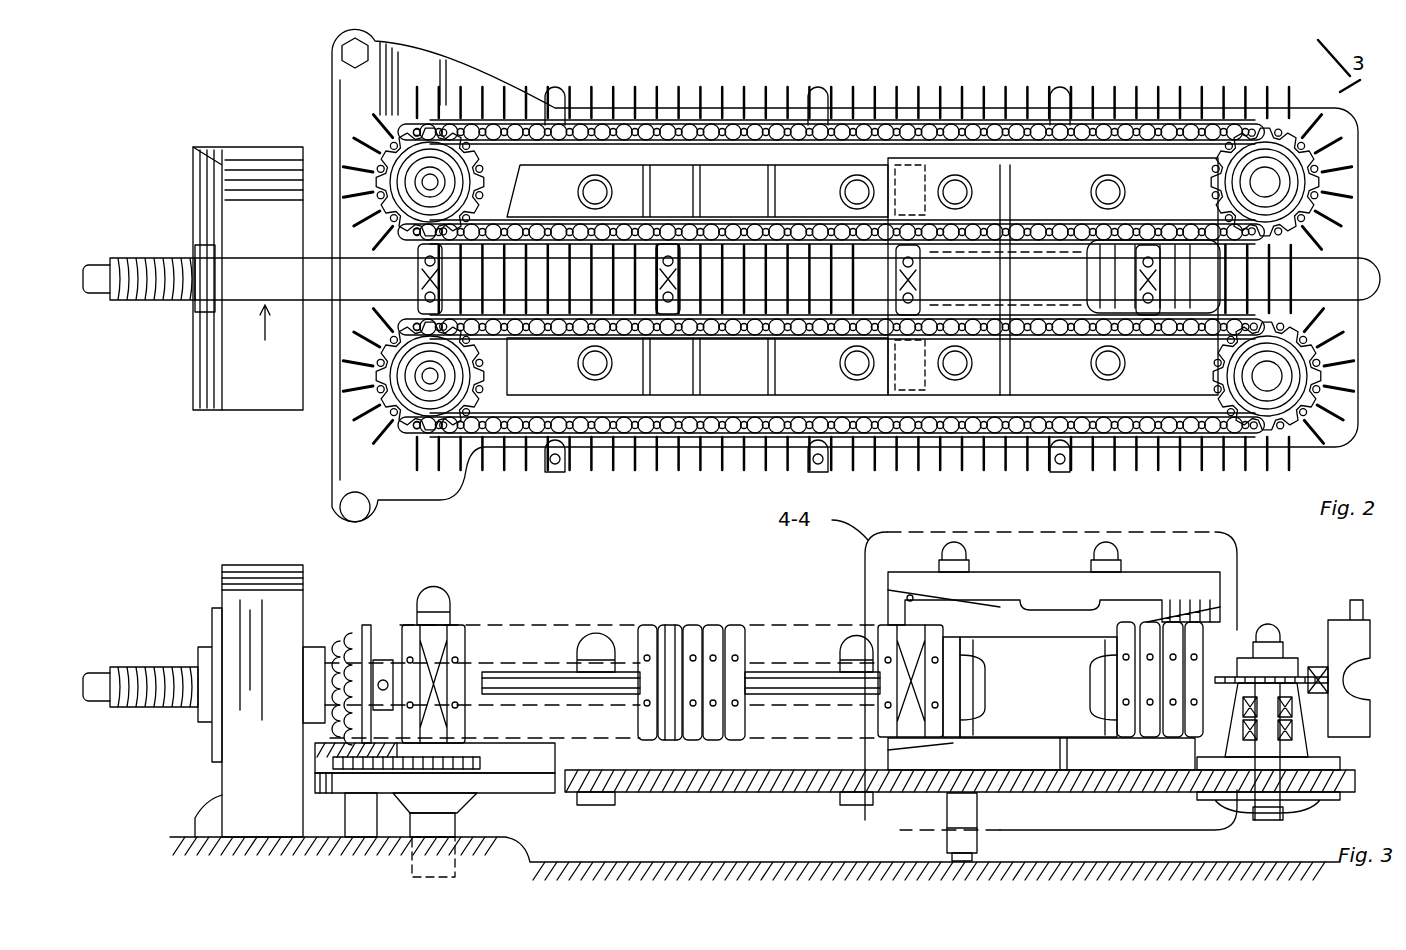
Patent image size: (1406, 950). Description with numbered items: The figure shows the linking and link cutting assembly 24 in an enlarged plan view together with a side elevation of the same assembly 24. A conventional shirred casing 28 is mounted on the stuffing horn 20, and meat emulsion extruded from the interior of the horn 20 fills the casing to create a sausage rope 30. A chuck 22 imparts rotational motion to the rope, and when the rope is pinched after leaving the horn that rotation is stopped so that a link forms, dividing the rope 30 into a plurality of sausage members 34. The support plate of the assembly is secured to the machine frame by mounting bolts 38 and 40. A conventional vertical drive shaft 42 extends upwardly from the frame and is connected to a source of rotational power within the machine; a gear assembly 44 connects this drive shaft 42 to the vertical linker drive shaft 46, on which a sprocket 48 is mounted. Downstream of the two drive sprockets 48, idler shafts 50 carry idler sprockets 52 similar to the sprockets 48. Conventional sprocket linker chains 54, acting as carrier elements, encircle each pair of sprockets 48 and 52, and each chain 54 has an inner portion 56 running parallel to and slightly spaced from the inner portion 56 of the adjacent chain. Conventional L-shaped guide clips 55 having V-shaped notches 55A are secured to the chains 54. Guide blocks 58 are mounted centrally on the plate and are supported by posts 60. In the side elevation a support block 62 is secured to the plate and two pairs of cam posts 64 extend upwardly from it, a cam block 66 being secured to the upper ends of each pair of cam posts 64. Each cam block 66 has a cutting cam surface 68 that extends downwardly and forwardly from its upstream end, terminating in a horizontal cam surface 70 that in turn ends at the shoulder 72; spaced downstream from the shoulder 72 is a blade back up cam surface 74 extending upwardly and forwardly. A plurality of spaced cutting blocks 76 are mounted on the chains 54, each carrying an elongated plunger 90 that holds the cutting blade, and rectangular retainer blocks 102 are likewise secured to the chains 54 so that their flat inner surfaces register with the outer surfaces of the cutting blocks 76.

In FIG. 2, the stuffing horn 20 is at (180, 258).
In FIG. 3, the stuffing horn 20 is at (162, 667).
In FIG. 2, the chuck 22 is at (222, 165).
In FIG. 3, the chuck 22 is at (222, 580).
In FIG. 2, the cutting head assembly 24 is at (326, 70).
In FIG. 3, the cutting head assembly 24 is at (556, 600).
In FIG. 2, the shirred casing 28 is at (150, 258).
In FIG. 3, the shirred casing 28 is at (102, 667).
In FIG. 2, the sausage rope 30 is at (1350, 262).
In FIG. 3, the sausage rope 30 is at (367, 690).
In FIG. 2, the sausage members 34 is at (1356, 302).
In FIG. 2, the mounting bolt 38 is at (340, 52).
In FIG. 3, the mounting bolt 38 is at (357, 825).
In FIG. 3, the mounting bolt 40 is at (782, 794).
In FIG. 3, the vertical drive shaft 42 is at (410, 860).
In FIG. 3, the gear assembly 44 is at (475, 792).
In FIG. 2, the vertical linker drive shaft 46 is at (447, 158).
In FIG. 3, the vertical linker drive shaft 46 is at (440, 596).
In FIG. 2, the sprocket 48 is at (440, 178).
In FIG. 3, the sprocket 48 is at (490, 683).
In FIG. 2, the idler shaft 50 is at (1228, 183).
In FIG. 3, the idler shaft 50 is at (1240, 782).
In FIG. 2, the idler sprocket 52 is at (1215, 200).
In FIG. 3, the idler sprocket 52 is at (1262, 700).
In FIG. 2, the sprocket linker chain 54 is at (606, 122).
In FIG. 3, the sprocket linker chain 54 is at (370, 640).
In FIG. 2, the L-shaped guide clip 55 is at (618, 118).
In FIG. 3, the L-shaped guide clip 55 is at (365, 680).
In FIG. 3, the V-shaped notch 55A is at (374, 660).
In FIG. 2, the inner portion 56 is at (848, 340).
In FIG. 2, the guide block 58 is at (812, 106).
In FIG. 3, the guide block 58 is at (880, 600).
In FIG. 2, the post 60 is at (580, 218).
In FIG. 3, the post 60 is at (456, 625).
In FIG. 3, the support block 62 is at (1040, 762).
In FIG. 3, the cam post 64 is at (1010, 775).
In FIG. 2, the cam block 66 is at (1302, 108).
In FIG. 3, the cam block 66 is at (1190, 598).
In FIG. 3, the cutting cam surface 68 is at (862, 600).
In FIG. 3, the horizontal cam surface 70 is at (1002, 572).
In FIG. 3, the shoulder 72 is at (1020, 590).
In FIG. 3, the blade back up cam surface 74 is at (1212, 615).
In FIG. 2, the cutting block 76 is at (736, 102).
In FIG. 3, the cutting block 76 is at (462, 662).
In FIG. 3, the plunger 90 is at (465, 640).
In FIG. 2, the retainer block 102 is at (710, 176).
In FIG. 3, the retainer block 102 is at (684, 625).